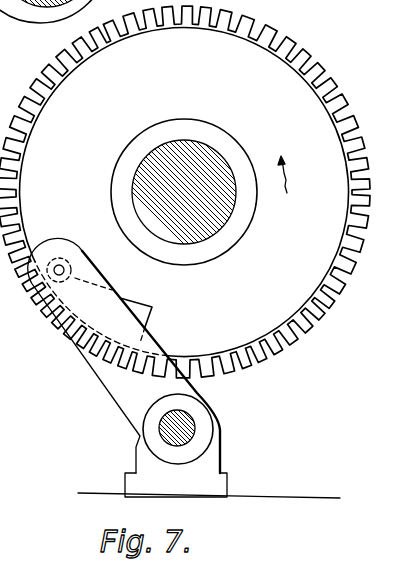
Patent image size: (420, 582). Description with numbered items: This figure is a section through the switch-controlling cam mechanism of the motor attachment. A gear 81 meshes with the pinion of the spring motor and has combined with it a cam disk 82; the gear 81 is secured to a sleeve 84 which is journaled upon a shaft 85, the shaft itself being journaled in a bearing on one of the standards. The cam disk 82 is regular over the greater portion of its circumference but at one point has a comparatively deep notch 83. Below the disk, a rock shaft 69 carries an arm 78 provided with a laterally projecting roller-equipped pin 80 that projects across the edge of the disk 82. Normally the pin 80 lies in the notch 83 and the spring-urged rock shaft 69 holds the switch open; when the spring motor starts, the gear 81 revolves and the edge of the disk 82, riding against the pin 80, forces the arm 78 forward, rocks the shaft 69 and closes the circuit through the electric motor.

The rock shaft 69 is at (160, 432).
The arm 78 is at (127, 367).
The roller equipped pin 80 is at (60, 265).
The gear 81 is at (282, 346).
The cam disk 82 is at (184, 192).
The notch 83 is at (127, 298).
The sleeve 84 is at (212, 130).
The shaft 85 is at (212, 232).